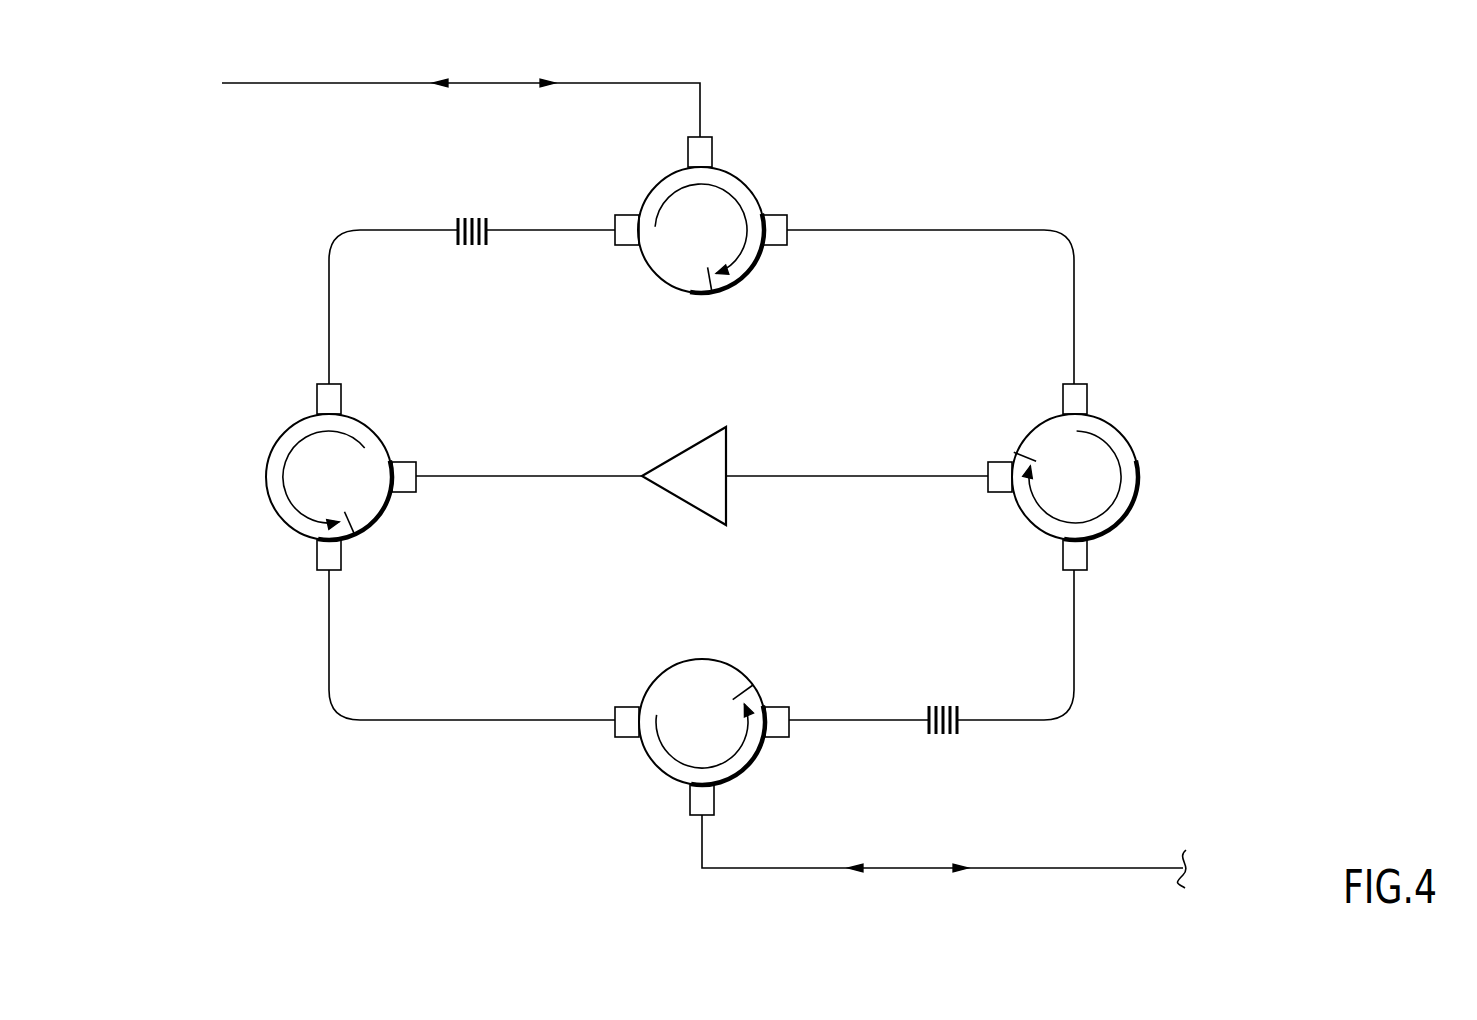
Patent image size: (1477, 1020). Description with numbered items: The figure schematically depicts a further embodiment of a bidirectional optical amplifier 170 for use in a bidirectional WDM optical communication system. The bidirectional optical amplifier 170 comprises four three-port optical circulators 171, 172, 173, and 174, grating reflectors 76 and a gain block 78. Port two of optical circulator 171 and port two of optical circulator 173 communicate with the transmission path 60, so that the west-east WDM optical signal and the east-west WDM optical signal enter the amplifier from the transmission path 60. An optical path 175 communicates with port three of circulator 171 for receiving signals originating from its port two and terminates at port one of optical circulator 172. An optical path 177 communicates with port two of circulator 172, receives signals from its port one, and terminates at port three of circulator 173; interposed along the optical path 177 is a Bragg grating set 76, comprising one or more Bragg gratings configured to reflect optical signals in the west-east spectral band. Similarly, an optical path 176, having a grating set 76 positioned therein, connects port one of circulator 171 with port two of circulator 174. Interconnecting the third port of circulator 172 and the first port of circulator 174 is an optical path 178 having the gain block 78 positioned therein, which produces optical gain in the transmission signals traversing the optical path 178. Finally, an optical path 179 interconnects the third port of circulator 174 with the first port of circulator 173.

The transmission path 60 is at (663, 83).
The Bragg grating set 76 is at (468, 248).
The gain block 78 is at (688, 447).
The bidirectional optical amplifier 170 is at (996, 124).
The optical circulator 171 is at (735, 174).
The optical circulator 172 is at (1113, 422).
The optical circulator 173 is at (703, 658).
The optical circulator 174 is at (270, 510).
The optical path 175 is at (993, 230).
The optical path 176 is at (370, 230).
The optical path 177 is at (1077, 668).
The optical path 178 is at (523, 476).
The optical path 179 is at (403, 720).